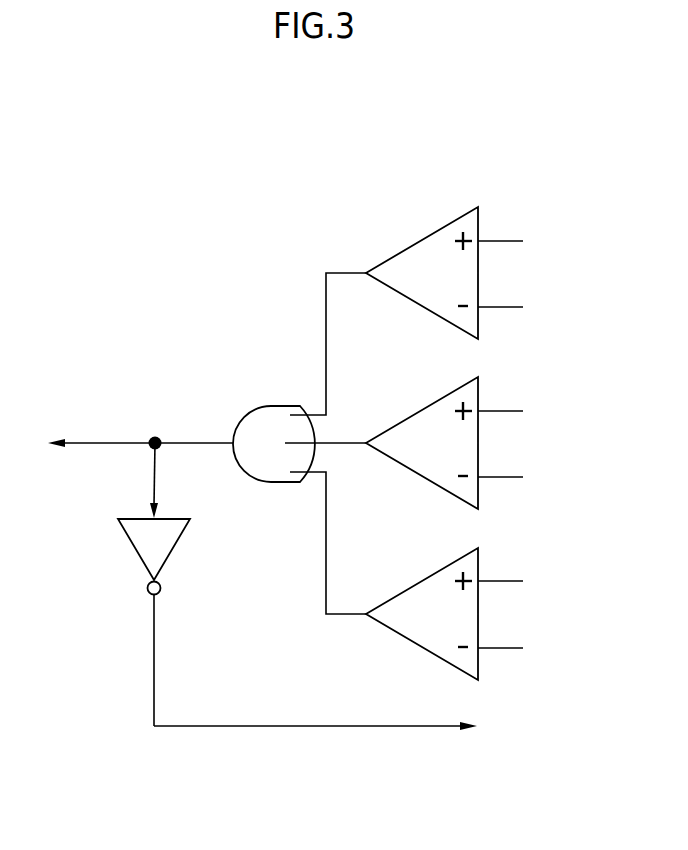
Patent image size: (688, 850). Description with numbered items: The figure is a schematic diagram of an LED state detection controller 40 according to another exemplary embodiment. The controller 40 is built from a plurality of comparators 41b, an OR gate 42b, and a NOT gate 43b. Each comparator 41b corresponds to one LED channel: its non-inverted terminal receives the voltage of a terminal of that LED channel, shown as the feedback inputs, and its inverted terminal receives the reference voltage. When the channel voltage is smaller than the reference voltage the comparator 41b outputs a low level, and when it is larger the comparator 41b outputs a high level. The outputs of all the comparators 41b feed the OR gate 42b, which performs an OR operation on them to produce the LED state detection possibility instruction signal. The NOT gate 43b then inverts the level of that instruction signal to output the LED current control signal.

The LED state detection controller 40 is at (133, 218).
The comparator 41b is at (422, 239).
The OR gate 42b is at (250, 412).
The NOT gate 43b is at (174, 551).